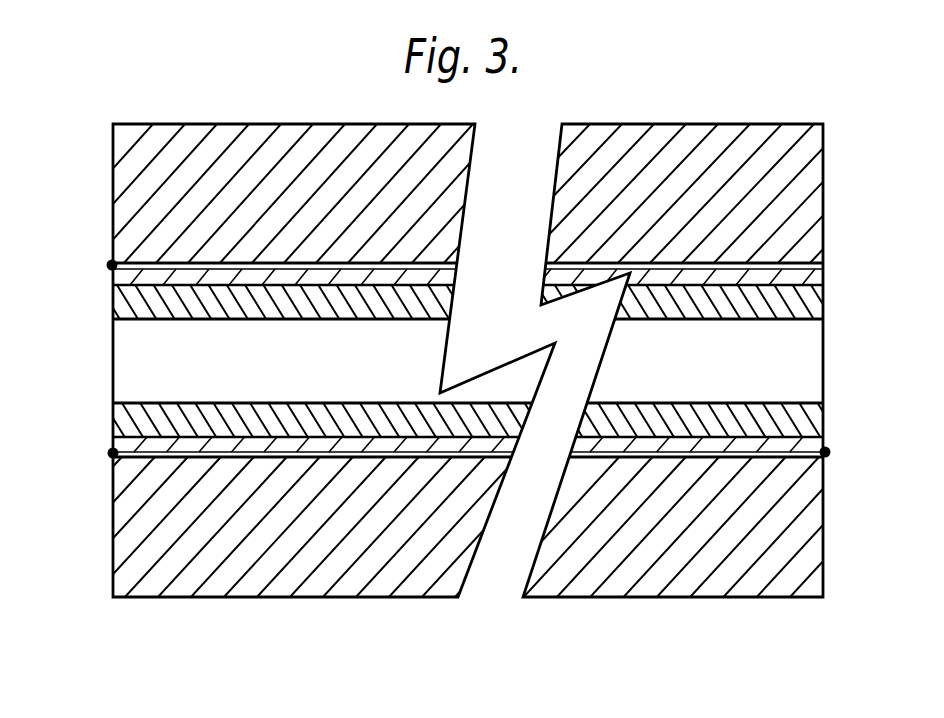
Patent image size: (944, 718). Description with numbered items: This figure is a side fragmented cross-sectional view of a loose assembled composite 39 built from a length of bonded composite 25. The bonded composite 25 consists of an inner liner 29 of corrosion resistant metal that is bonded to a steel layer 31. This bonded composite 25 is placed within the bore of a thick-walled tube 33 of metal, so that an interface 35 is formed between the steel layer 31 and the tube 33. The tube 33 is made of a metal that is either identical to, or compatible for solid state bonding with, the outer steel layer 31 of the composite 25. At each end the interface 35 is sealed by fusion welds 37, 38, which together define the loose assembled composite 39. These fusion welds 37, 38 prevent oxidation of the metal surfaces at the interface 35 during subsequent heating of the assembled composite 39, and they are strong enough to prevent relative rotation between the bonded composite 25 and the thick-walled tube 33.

The bonded composite 25 is at (104, 414).
The inner liner 29 is at (810, 305).
The steel layer 31 is at (826, 275).
The thick-walled tube 33 is at (797, 160).
The interface 35 is at (113, 485).
The fusion weld 37 is at (828, 456).
The fusion weld 38 is at (109, 265).
The loose assembled composite 39 is at (334, 606).